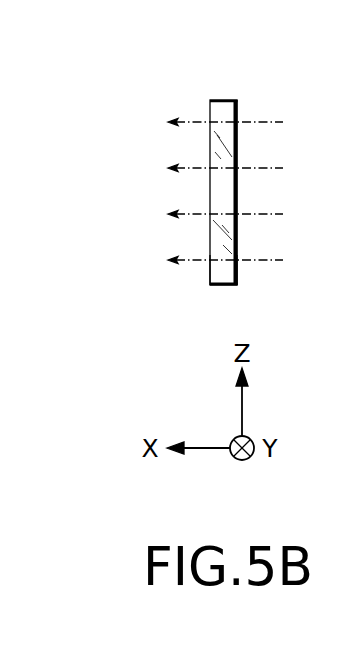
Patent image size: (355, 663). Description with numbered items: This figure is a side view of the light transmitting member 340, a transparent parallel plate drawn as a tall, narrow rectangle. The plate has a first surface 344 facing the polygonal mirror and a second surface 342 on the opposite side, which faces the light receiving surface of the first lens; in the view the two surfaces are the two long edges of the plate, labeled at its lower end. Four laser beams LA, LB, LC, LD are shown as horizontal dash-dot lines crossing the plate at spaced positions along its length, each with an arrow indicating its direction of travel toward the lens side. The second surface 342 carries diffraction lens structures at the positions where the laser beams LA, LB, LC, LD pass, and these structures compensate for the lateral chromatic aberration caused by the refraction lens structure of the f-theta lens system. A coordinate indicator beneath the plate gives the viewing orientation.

The light transmitting member 340 is at (218, 100).
The second surface 342 is at (210, 275).
The first surface 344 is at (238, 275).
The laser beam LA is at (192, 260).
The laser beam LB is at (192, 214).
The laser beam LC is at (192, 168).
The laser beam LD is at (192, 122).